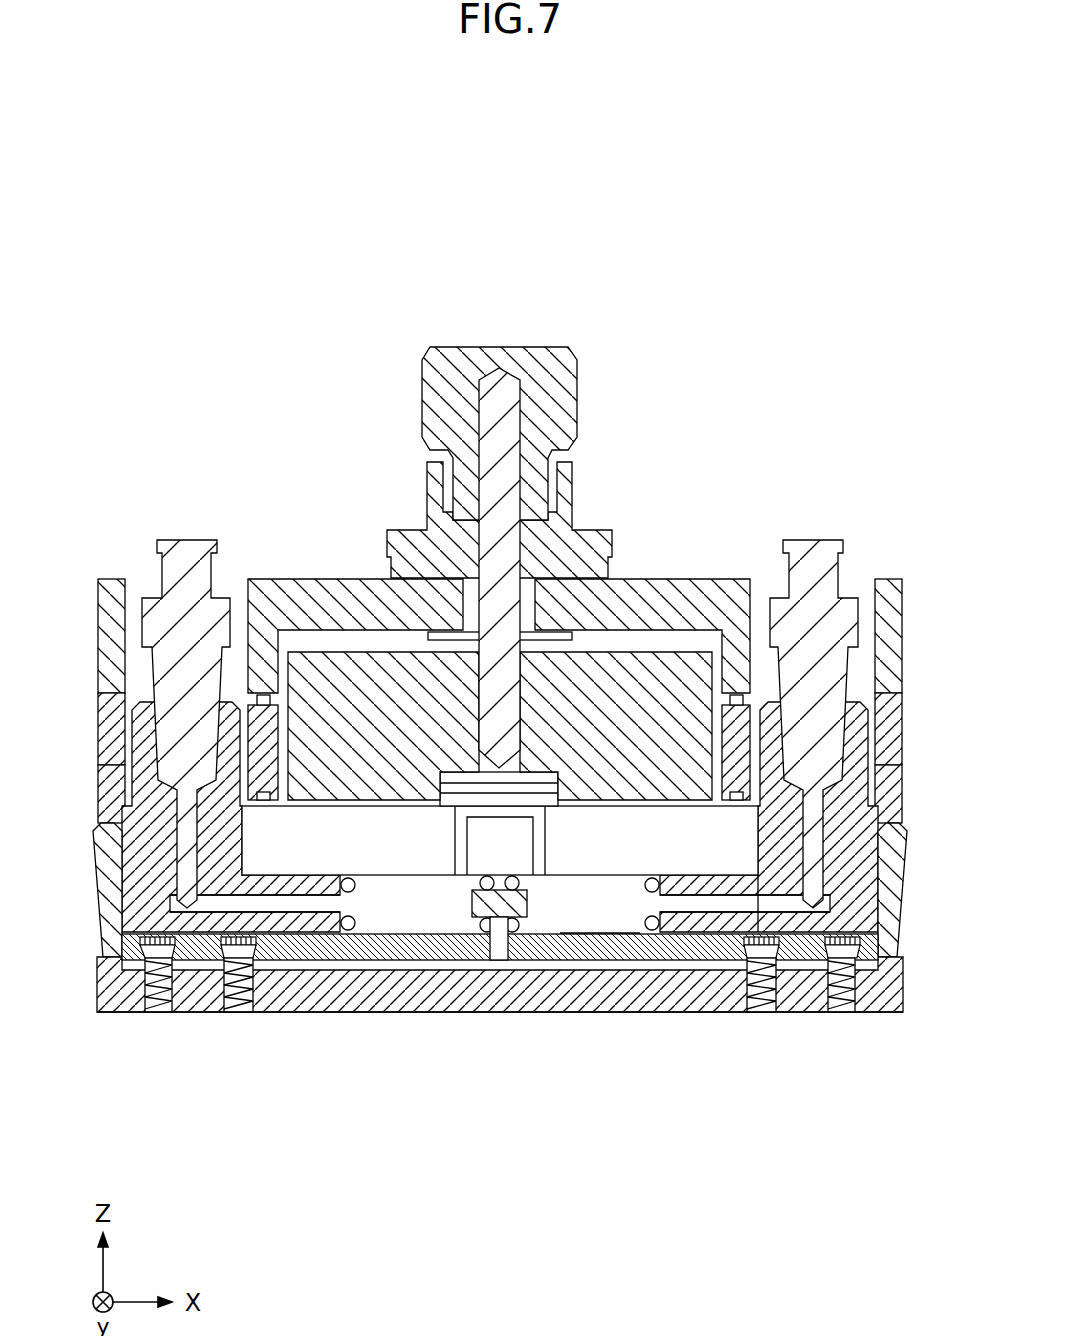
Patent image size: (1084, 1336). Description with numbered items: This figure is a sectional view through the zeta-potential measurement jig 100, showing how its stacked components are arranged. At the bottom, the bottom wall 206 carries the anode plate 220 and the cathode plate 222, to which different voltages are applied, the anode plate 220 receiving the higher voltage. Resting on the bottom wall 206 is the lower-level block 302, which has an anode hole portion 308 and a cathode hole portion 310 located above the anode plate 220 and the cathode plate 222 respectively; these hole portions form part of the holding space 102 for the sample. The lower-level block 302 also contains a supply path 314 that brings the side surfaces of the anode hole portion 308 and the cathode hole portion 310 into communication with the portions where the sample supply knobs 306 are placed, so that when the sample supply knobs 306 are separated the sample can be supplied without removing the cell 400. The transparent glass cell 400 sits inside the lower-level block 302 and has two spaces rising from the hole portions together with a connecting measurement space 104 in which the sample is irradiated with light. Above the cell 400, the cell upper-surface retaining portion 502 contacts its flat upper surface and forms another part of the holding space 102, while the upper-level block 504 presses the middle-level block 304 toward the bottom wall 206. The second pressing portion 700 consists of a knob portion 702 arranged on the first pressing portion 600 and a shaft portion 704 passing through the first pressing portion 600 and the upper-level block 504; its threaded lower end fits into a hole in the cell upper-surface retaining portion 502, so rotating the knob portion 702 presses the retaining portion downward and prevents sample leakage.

The zeta-potential measurement jig 100 is at (465, 1185).
The holding space 102 is at (459, 880).
The measurement space 104 is at (521, 828).
The bottom wall 206 is at (727, 990).
The anode plate 220 is at (470, 948).
The cathode plate 222 is at (592, 936).
The lower-level block 302 is at (861, 878).
The middle-level block 304 is at (255, 730).
The sample supply knobs 306 is at (808, 557).
The anode hole portion 308 is at (376, 918).
The cathode hole portion 310 is at (627, 918).
The supply path 314 is at (787, 918).
The cell 400 is at (297, 850).
The cell upper-surface retaining portion 502 is at (330, 680).
The upper-level block 504 is at (720, 600).
The first pressing portion 600 is at (588, 553).
The second pressing portion 700 is at (521, 522).
The knob portion 702 is at (566, 370).
The shaft portion 704 is at (492, 400).